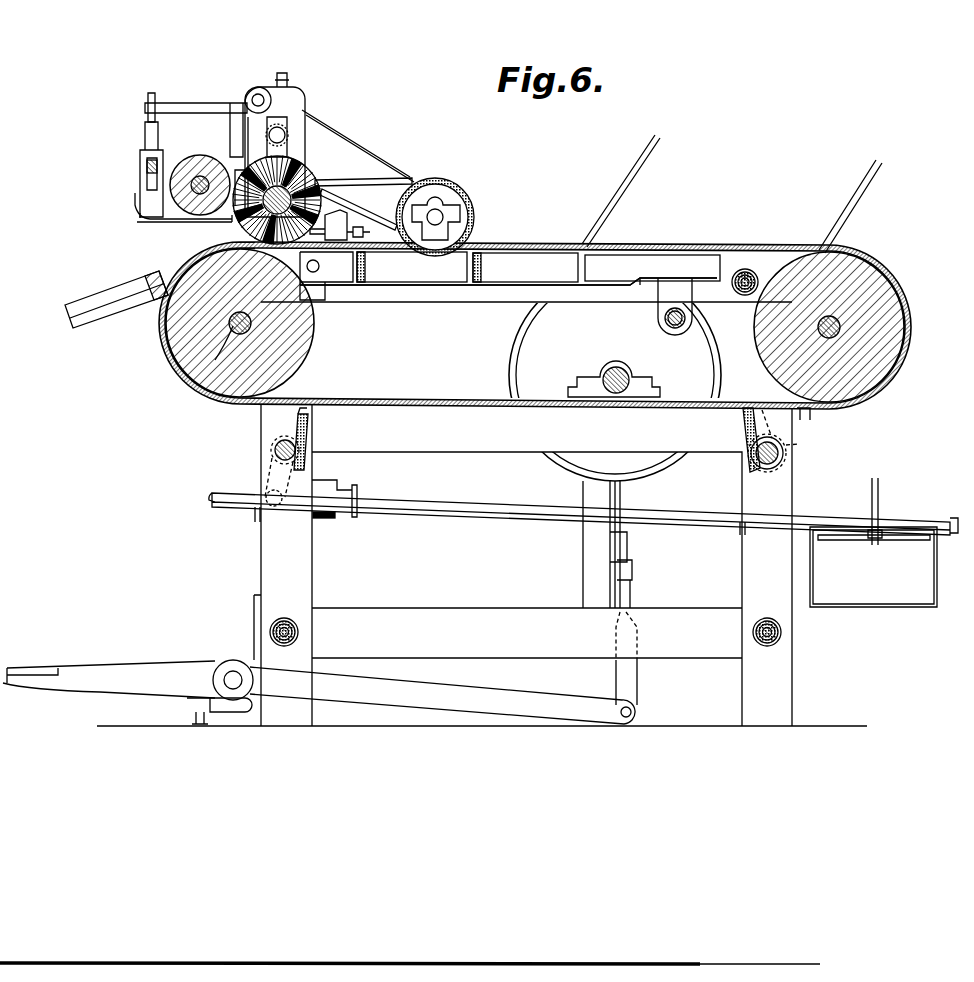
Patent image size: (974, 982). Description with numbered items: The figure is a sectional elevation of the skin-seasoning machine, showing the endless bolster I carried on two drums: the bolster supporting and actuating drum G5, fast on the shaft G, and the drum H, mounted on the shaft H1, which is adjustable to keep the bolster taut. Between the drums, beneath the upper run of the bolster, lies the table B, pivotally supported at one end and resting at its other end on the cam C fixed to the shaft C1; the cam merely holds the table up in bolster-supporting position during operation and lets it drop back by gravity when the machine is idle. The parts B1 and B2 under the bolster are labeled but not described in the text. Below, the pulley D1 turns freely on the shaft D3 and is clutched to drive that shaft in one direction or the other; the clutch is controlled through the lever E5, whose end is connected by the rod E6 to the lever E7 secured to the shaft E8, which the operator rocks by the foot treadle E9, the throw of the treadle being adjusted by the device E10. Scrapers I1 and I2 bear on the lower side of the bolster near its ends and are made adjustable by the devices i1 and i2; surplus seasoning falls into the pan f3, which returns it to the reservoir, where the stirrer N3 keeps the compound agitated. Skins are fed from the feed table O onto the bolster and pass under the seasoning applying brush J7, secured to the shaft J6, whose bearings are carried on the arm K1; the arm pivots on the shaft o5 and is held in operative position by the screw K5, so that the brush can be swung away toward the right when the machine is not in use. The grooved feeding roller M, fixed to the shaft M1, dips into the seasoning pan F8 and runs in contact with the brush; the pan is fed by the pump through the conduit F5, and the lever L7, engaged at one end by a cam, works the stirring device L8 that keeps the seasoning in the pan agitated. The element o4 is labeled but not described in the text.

The bolster I is at (632, 247).
The shaft G is at (208, 390).
The bolster supporting and actuating drum G5 is at (185, 352).
The drum H is at (862, 292).
The shaft H1 is at (834, 316).
The table B is at (316, 272).
The supporting bar B1 is at (508, 272).
The supporting blocks B2 is at (378, 266).
The cam C is at (675, 306).
The shaft C1 is at (668, 330).
The pulley D1 is at (664, 466).
The shaft D3 is at (608, 370).
The scraper I1 is at (312, 420).
The scraper I2 is at (743, 420).
The adjusting device i1 is at (262, 480).
The adjusting device i2 is at (788, 462).
The pan f3 is at (483, 520).
The lever E5 is at (627, 556).
The rod E6 is at (637, 675).
The lever E7 is at (442, 695).
The shaft E8 is at (230, 672).
The foot treadle E9 is at (109, 679).
The treadle throw adjusting device E10 is at (185, 704).
The conduit F5 is at (873, 567).
The stirrer N3 is at (845, 545).
The feed table O is at (80, 318).
The shaft o5 is at (256, 90).
The brush driving pulley o4 is at (400, 183).
The arm K1 is at (306, 118).
The screw K5 is at (348, 228).
The lever L7 is at (192, 103).
The stirring device L8 is at (145, 130).
The grooved feeding roller M is at (193, 165).
The shaft M1 is at (203, 172).
The pan F8 is at (150, 222).
The shaft J6 is at (243, 222).
The seasoning applying brush J7 is at (363, 189).